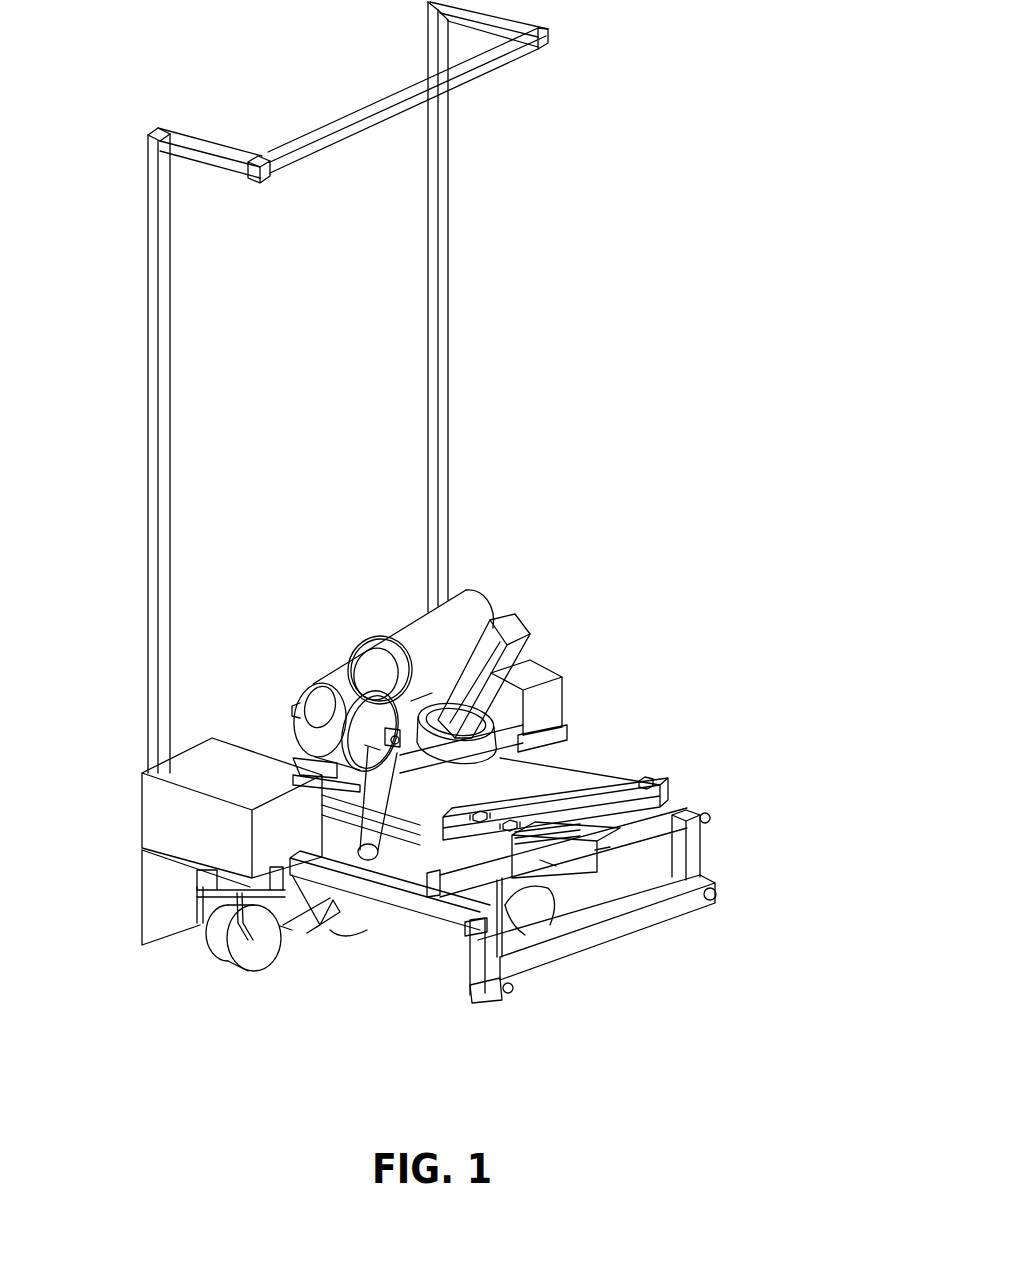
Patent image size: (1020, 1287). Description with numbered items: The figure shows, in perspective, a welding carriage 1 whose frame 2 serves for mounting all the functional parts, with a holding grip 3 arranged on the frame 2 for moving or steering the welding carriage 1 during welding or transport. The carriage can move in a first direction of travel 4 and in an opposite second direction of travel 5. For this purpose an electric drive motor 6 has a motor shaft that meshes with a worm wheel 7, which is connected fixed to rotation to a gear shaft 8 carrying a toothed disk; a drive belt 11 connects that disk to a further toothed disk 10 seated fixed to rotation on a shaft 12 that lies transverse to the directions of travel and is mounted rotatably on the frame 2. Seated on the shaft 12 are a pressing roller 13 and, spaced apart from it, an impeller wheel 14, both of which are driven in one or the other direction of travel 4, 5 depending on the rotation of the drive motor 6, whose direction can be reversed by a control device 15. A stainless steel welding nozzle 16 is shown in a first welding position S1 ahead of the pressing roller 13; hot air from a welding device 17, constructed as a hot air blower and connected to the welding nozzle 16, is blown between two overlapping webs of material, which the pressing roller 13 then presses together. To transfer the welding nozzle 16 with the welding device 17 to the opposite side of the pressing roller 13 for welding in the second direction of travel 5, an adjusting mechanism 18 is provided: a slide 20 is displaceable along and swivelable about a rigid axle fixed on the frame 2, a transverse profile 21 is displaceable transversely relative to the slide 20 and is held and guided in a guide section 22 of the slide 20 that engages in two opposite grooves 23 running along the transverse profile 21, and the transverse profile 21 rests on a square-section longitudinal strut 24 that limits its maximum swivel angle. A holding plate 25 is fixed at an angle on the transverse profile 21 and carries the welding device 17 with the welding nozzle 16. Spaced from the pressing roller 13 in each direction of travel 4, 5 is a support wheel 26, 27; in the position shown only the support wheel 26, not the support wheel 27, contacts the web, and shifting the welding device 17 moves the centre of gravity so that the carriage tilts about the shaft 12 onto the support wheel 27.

The welding carriage 1 is at (748, 364).
The frame 2 is at (695, 853).
The holding grip 3 is at (477, 75).
The first direction of travel 4 is at (332, 950).
The second direction of travel 5 is at (667, 742).
The electric drive motor 6 is at (460, 612).
The worm wheel 7 is at (312, 747).
The gear shaft 8 is at (295, 705).
The toothed disk 10 is at (367, 848).
The drive belt 11 is at (368, 743).
The shaft 12 is at (565, 928).
The pressing roller 13 is at (353, 845).
The impeller wheel 14 is at (547, 923).
The control device 15 is at (188, 827).
The welding nozzle 16 is at (308, 917).
The welding device 17 is at (448, 722).
The adjusting mechanism 18 is at (603, 853).
The slide 20 is at (512, 903).
The transverse profile 21 is at (583, 860).
The guide section 22 is at (543, 862).
The grooves 23 is at (545, 825).
The longitudinal strut 24 is at (650, 777).
The holding plate 25 is at (463, 760).
The support wheel 26 is at (210, 938).
The support wheel 27 is at (505, 805).
The first welding position S1 is at (287, 930).